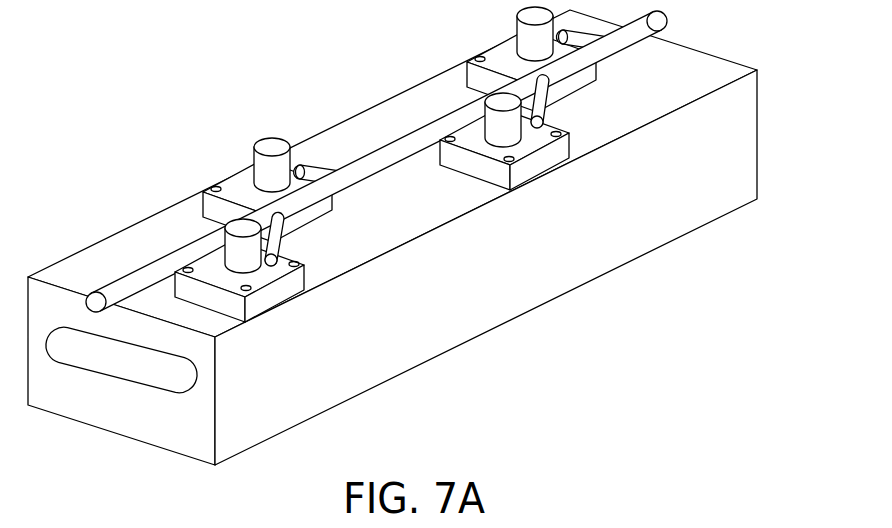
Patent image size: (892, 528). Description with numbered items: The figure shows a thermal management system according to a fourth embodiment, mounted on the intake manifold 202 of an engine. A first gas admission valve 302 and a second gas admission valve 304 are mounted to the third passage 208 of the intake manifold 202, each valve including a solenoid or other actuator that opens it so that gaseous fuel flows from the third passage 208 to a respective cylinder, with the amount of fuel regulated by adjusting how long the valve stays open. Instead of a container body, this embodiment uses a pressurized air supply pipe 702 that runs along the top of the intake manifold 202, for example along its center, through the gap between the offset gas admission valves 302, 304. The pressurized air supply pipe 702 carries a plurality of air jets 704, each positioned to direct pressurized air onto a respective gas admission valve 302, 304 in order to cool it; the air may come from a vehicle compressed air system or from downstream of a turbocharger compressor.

The intake manifold 202 is at (717, 67).
The third passage 208 is at (121, 360).
The first gas admission valve 302 is at (282, 288).
The second gas admission valve 304 is at (248, 183).
The pressurized air supply pipe 702 is at (650, 15).
The air jets 704 is at (318, 169).